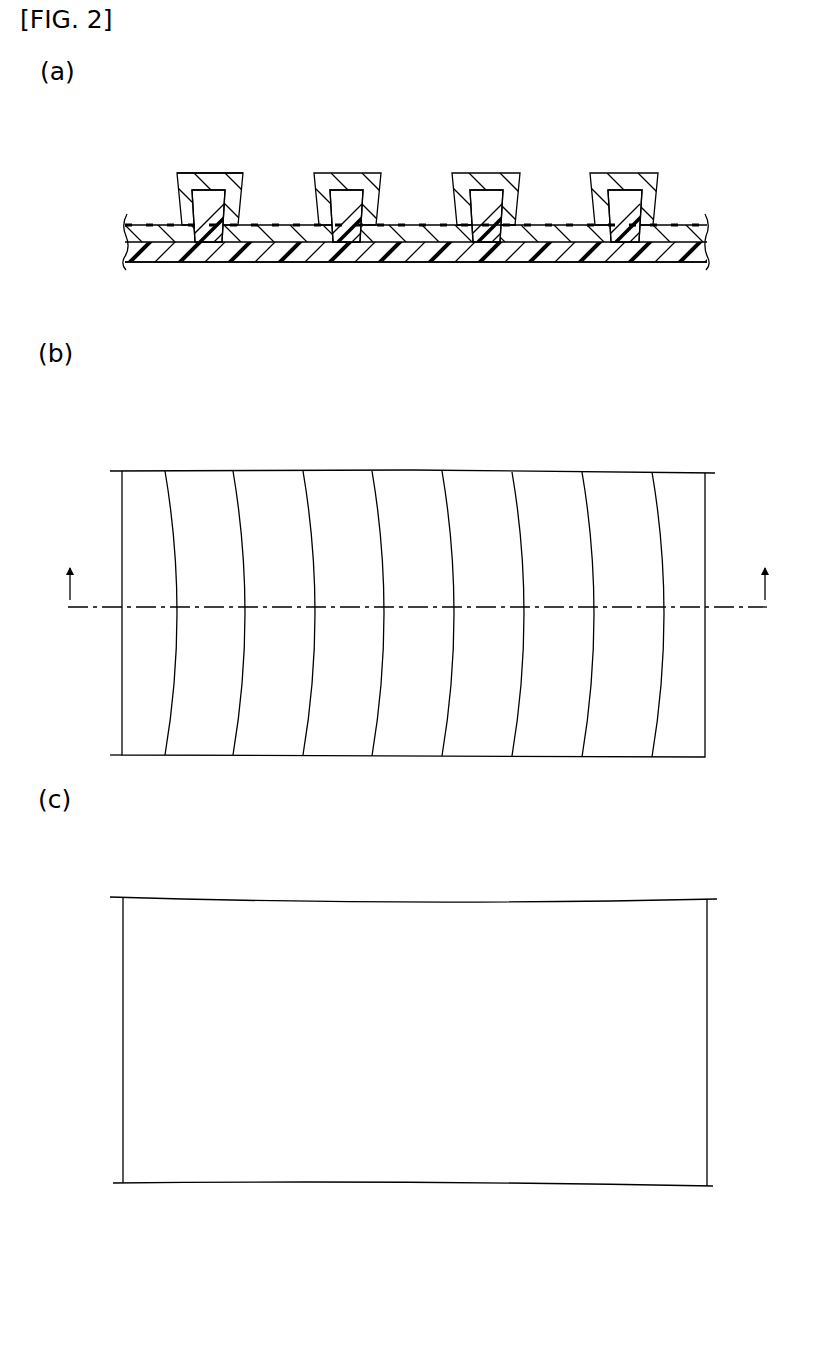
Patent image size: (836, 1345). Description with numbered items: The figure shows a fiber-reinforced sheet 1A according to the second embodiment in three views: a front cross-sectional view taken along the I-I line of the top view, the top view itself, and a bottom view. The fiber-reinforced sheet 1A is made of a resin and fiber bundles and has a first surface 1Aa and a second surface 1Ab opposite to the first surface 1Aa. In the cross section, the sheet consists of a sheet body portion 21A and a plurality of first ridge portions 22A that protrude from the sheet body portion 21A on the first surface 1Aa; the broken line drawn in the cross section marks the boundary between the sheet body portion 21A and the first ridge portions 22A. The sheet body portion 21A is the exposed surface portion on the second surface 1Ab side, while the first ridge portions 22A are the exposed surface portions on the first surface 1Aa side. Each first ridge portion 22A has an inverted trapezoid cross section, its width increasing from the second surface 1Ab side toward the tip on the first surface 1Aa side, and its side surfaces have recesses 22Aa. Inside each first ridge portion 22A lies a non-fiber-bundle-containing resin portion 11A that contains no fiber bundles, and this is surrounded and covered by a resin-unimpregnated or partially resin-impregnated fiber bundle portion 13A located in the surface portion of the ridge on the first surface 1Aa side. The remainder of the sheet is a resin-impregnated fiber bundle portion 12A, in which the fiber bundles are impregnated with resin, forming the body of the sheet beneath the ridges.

The fiber-reinforced sheet 1A is at (142, 147).
The first surface 1Aa is at (200, 172).
The second surface 1Ab is at (201, 263).
The non-fiber-bundle-containing resin portion 11A is at (338, 190).
The resin-impregnated fiber bundle portion 12A is at (397, 263).
The resin-unimpregnated fiber bundle portion or partially resin-impregnated fiber bu 13A is at (407, 224).
The sheet body portion 21A is at (481, 263).
The first ridge portion 22A is at (490, 171).
The recess 22Aa is at (517, 222).